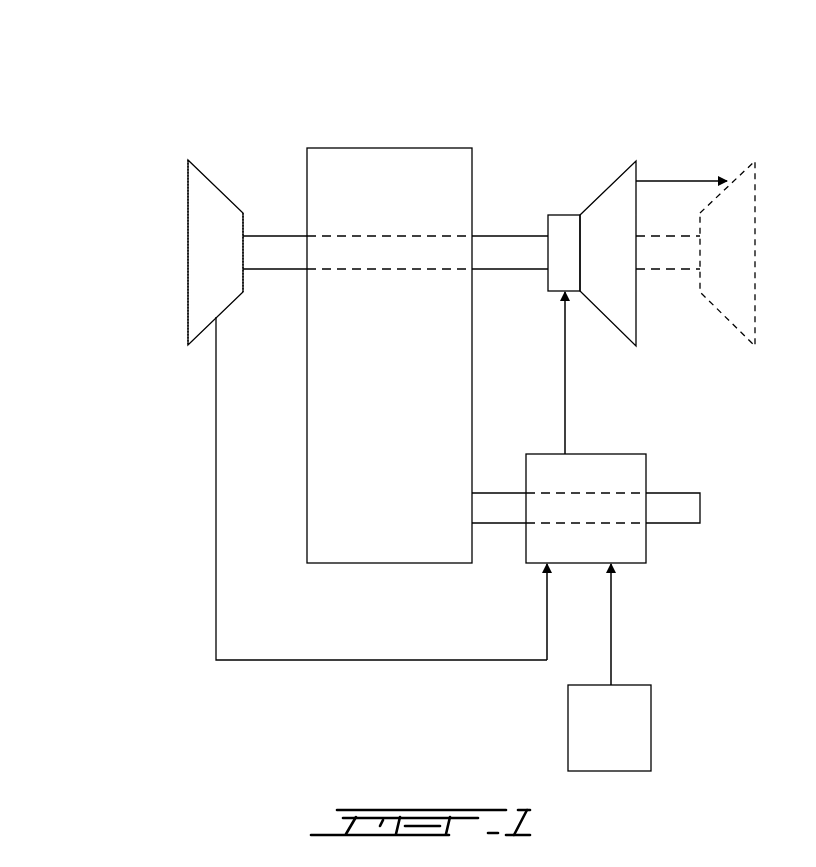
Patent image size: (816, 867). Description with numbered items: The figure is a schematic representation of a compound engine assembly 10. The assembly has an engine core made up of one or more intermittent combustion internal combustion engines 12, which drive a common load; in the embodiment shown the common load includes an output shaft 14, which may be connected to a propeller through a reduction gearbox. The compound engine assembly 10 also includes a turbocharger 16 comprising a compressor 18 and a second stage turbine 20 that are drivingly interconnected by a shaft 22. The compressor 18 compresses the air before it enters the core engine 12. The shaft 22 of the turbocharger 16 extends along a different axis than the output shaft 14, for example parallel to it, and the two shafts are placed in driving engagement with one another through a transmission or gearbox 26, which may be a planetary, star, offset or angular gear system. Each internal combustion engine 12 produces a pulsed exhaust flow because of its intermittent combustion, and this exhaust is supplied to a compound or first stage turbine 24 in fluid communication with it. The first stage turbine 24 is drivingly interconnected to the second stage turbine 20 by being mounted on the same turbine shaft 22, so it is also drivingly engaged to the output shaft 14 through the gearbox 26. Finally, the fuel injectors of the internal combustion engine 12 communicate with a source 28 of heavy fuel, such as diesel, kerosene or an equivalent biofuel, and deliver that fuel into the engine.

The compound engine assembly 10 is at (136, 106).
The internal combustion engine 12 is at (612, 453).
The output shaft 14 is at (688, 528).
The turbocharger 16 is at (256, 140).
The compressor 18 is at (188, 190).
The second stage turbine 20 is at (745, 170).
The shaft 22 is at (276, 235).
The first stage turbine 24 is at (608, 185).
The gearbox 26 is at (413, 148).
The source of heavy fuel 28 is at (615, 723).